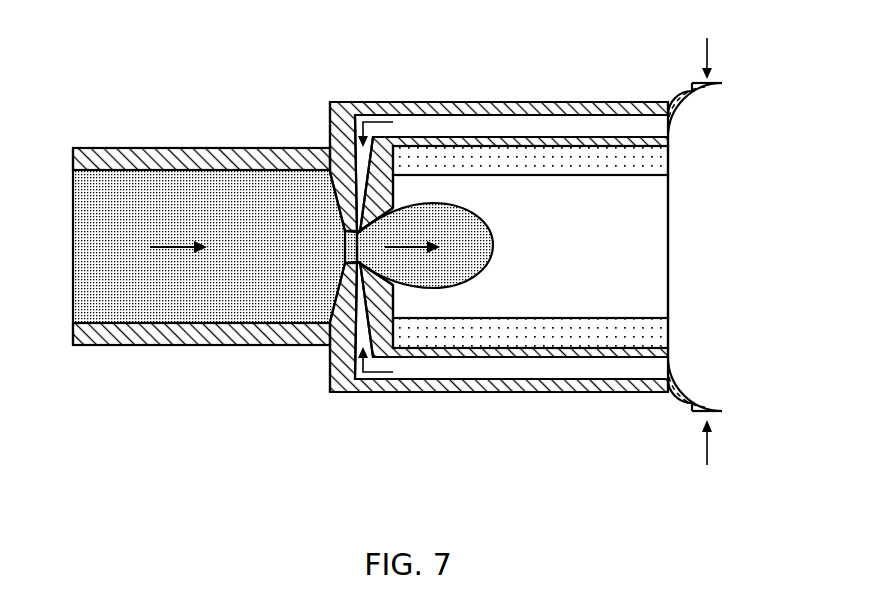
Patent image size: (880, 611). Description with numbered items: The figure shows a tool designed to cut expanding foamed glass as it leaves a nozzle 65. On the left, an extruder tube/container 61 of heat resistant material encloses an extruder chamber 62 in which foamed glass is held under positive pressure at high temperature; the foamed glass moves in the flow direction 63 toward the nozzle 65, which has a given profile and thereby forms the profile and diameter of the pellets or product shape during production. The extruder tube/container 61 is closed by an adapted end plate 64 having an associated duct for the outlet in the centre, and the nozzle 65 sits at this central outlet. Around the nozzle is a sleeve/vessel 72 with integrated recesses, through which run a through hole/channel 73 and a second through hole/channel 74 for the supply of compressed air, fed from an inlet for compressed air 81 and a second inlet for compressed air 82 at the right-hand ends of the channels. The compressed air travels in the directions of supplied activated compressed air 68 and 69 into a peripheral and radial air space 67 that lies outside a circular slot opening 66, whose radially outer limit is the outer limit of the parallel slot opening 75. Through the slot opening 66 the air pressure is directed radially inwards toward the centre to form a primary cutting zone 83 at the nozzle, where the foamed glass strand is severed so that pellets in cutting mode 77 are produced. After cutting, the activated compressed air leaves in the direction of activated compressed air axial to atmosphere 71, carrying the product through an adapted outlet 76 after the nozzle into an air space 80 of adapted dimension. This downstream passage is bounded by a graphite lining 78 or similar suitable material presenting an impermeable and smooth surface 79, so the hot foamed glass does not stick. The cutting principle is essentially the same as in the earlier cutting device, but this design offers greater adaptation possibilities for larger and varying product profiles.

The extruder tube/container 61 is at (137, 158).
The extruder chamber 62 is at (167, 324).
The flow direction of foamed glass 63 is at (158, 247).
The end plate 64 is at (328, 358).
The nozzle 65 is at (345, 263).
The slot opening 66 is at (347, 231).
The peripheral and radial air space 67 is at (330, 142).
The direction of supplied activated compressed air 68 is at (375, 114).
The direction of supplied activated compressed air 69 is at (366, 393).
The direction of activated compressed air axial to atmosphere 71 is at (408, 243).
The sleeve/vessel 72 is at (474, 103).
The through hole/channel 73 is at (543, 136).
The through hole/channel 74 is at (505, 380).
The outer limit of the parallel slot opening 75 is at (398, 208).
The adapted outlet 76 is at (385, 268).
The pellets in cutting mode 77 is at (488, 237).
The graphite lining 78 is at (521, 330).
The impermeable and smooth surface 79 is at (598, 317).
The air space 80 is at (668, 212).
The inlet for compressed air 81 is at (705, 44).
The inlet for compressed air 82 is at (706, 442).
The primary cutting zone 83 is at (343, 246).